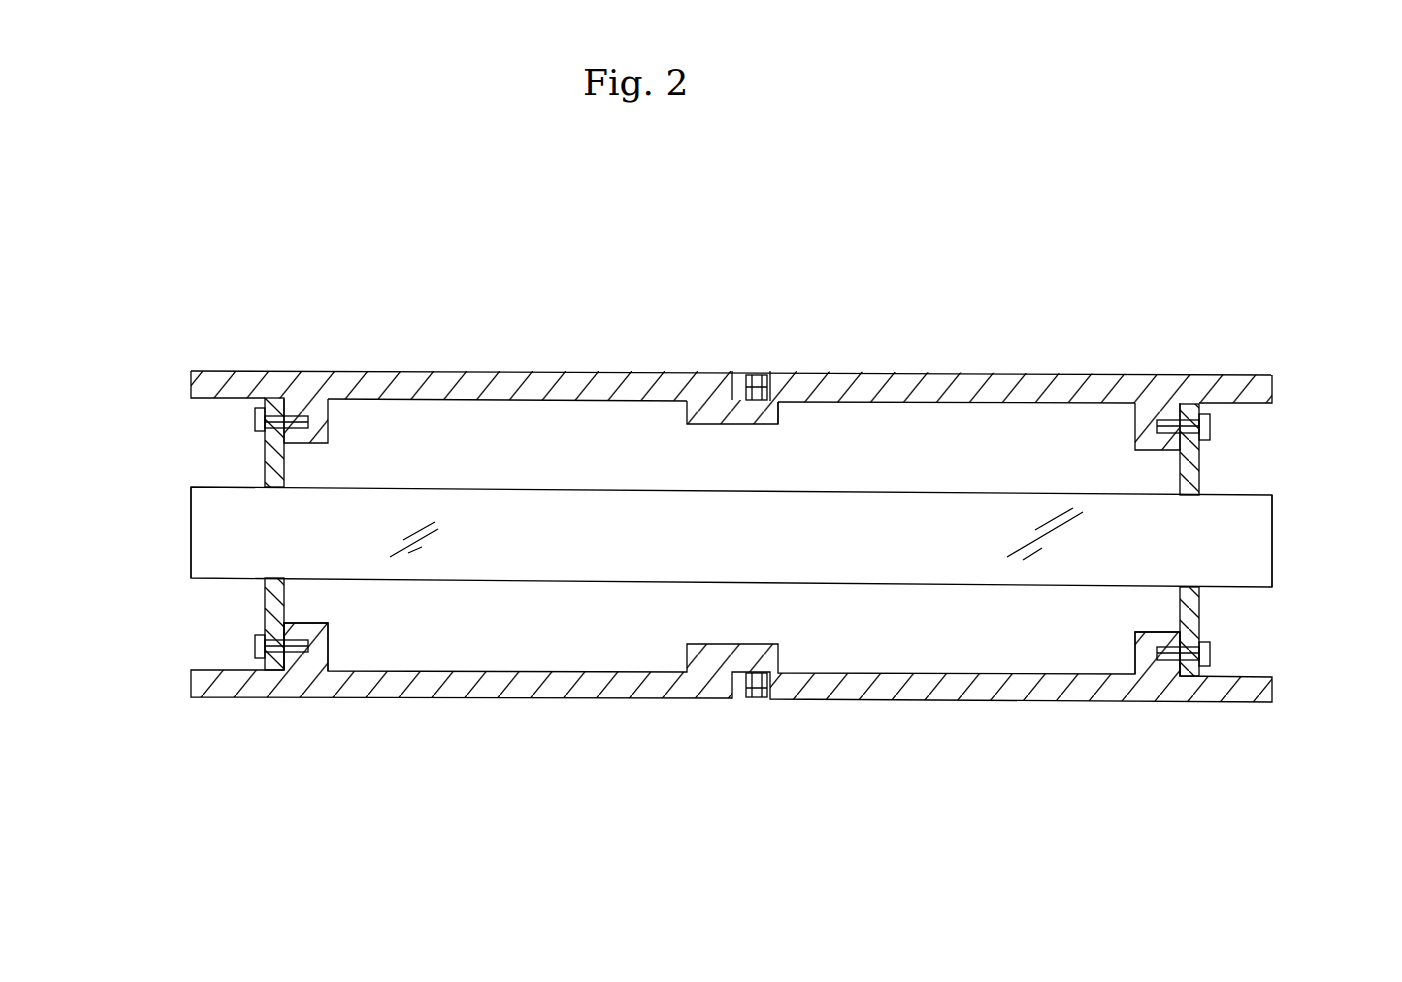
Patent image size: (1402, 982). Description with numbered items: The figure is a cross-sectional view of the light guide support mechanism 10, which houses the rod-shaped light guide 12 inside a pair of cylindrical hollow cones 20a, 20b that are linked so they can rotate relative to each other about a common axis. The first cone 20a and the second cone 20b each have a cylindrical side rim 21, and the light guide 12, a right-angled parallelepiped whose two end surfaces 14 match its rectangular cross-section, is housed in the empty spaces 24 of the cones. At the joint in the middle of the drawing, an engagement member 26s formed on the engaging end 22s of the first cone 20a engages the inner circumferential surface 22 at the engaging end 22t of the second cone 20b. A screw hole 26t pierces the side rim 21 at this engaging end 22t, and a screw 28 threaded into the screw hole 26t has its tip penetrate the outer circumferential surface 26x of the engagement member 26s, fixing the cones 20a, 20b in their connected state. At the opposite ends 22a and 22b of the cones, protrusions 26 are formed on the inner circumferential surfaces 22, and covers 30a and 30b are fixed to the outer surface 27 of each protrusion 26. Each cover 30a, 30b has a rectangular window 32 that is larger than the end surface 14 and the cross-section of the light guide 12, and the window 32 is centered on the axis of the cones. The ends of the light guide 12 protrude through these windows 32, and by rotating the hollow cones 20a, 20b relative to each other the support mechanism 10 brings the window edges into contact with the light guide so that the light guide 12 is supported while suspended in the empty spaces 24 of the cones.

The support mechanism 10 is at (1134, 196).
The light guide 12 is at (1000, 492).
The end surface 14 is at (191, 538).
The first cone 20a is at (508, 372).
The second cone 20b is at (968, 372).
The cylindrical side rim 21 is at (403, 378).
The inner circumferential surface 22 is at (400, 398).
The end of first cone 22a is at (238, 378).
The end of second cone 22b is at (1251, 385).
The engaging end of first cone 22s is at (700, 378).
The engaging end of second cone 22t is at (735, 382).
The empty space 24 is at (525, 625).
The protrusion 26 is at (313, 400).
The engagement member 26s is at (780, 408).
The screw hole 26t is at (764, 378).
The outer circumferential surface of engagement member 26x is at (778, 400).
The outer surface of protrusion 27 is at (270, 432).
The screw 28 is at (757, 376).
The cover 30a is at (265, 612).
The cover 30b is at (1198, 620).
The window 32 is at (268, 583).